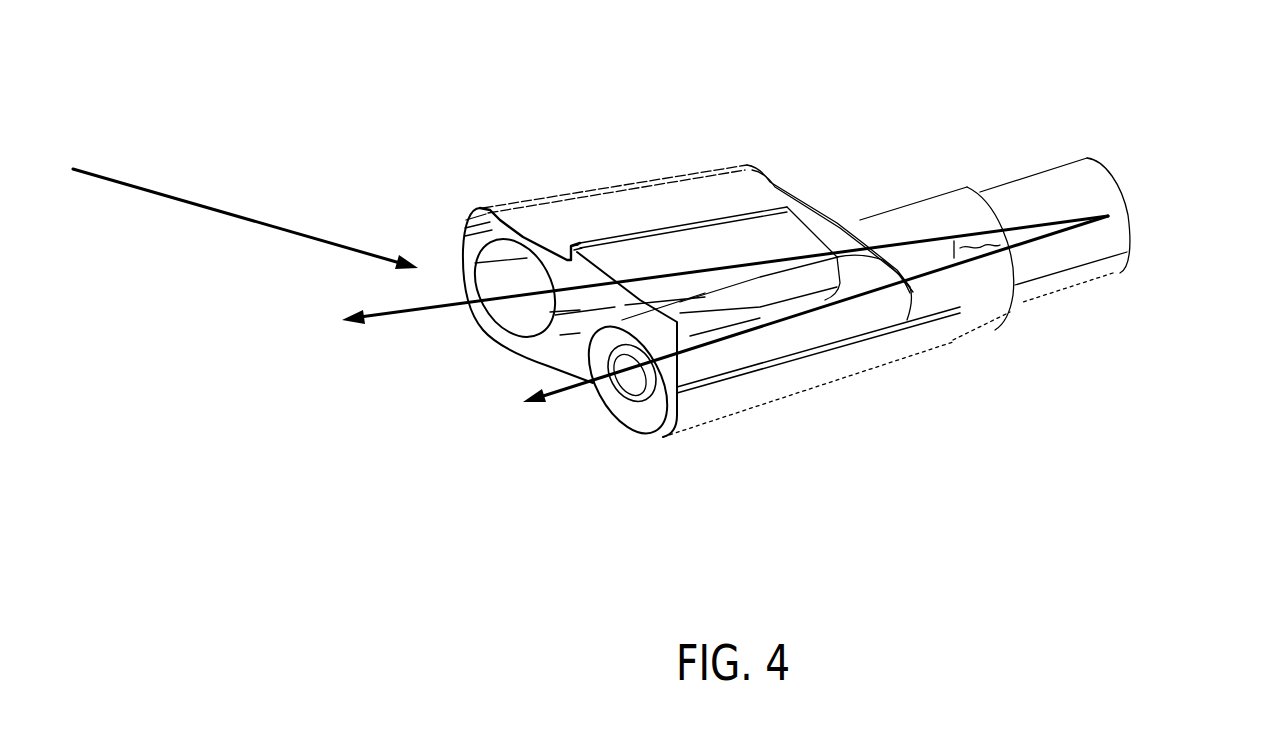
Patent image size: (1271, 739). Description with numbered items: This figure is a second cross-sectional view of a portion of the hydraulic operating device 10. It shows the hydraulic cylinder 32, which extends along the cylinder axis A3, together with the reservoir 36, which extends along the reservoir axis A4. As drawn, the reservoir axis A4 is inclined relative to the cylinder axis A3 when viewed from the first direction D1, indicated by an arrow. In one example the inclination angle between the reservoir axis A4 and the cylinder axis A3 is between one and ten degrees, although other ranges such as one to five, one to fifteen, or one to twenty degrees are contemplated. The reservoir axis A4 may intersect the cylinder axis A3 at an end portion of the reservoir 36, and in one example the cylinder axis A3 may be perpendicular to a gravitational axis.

The hydraulic operating device 10 is at (1200, 160).
The hydraulic cylinder 32 is at (629, 387).
The reservoir 36 is at (518, 317).
The first direction D1 is at (177, 200).
The cylinder axis A3 is at (556, 402).
The reservoir axis A4 is at (430, 314).